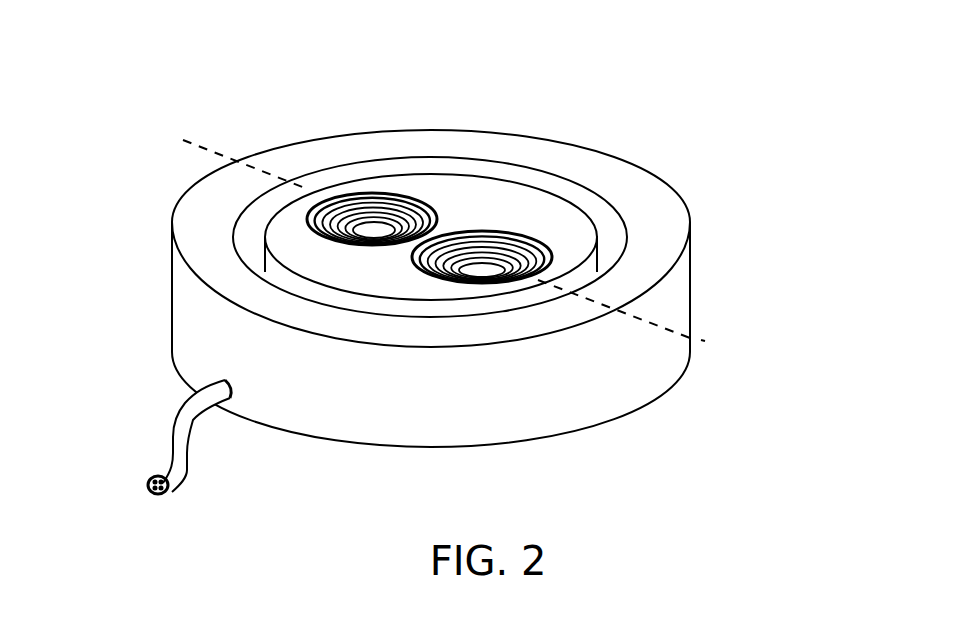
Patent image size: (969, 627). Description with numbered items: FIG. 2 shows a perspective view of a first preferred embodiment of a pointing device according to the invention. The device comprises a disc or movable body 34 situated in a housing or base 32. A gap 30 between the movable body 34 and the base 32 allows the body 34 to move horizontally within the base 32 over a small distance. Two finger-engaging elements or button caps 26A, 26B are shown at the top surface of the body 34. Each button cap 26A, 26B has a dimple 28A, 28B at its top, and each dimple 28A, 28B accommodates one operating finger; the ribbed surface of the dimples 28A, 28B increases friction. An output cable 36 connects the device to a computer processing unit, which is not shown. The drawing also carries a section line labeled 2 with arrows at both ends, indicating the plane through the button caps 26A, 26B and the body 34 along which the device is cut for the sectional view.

The section line 2- 2 is at (290, 84).
The button cap 26A is at (425, 210).
The button cap 26B is at (523, 235).
The dimple 28A is at (367, 230).
The dimple 28B is at (490, 263).
The gap 30 is at (610, 243).
The base 32 is at (582, 388).
The movable body 34 is at (293, 248).
The output cable 36 is at (178, 423).